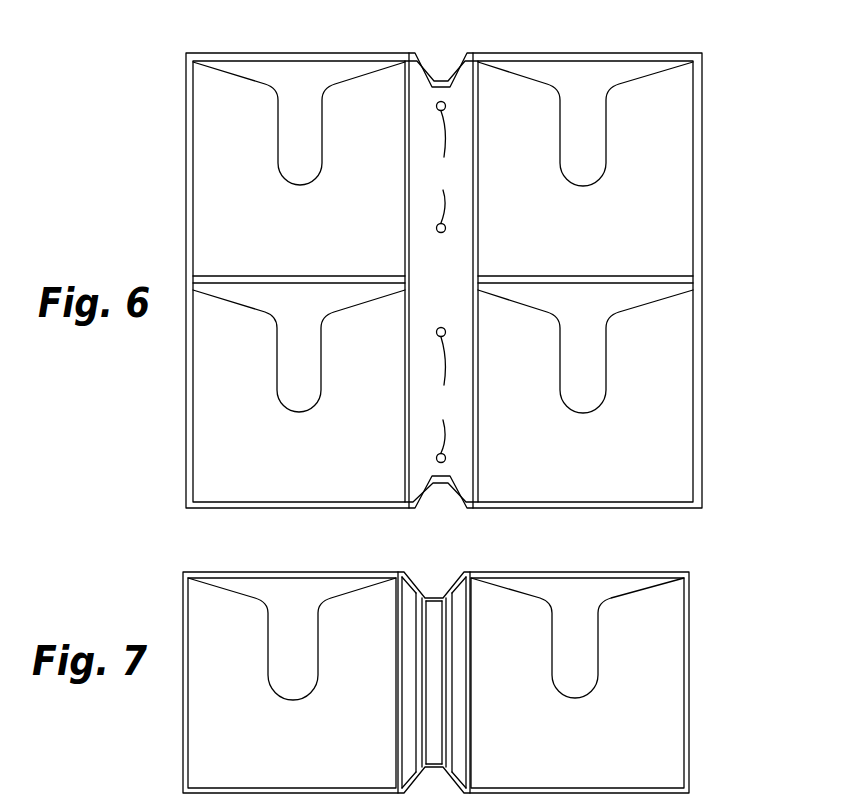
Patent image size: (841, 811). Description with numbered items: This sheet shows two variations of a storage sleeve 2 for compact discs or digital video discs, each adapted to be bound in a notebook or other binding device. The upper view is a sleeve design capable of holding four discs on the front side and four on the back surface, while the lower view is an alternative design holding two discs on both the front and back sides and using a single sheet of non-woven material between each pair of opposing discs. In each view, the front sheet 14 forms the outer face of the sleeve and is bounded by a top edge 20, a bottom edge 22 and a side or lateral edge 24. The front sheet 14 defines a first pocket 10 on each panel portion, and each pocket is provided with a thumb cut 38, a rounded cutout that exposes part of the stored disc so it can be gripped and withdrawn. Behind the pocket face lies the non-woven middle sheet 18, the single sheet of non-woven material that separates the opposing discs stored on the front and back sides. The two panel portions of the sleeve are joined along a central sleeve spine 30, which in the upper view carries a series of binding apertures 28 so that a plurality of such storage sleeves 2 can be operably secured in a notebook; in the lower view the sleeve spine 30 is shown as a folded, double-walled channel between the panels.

In FIG. 6, the storage sleeve 2 is at (148, 150).
In FIG. 7, the storage sleeve 2 is at (147, 591).
In FIG. 6, the first pocket 10 is at (272, 72).
In FIG. 7, the first pocket 10 is at (290, 582).
In FIG. 6, the front sheet 14 is at (218, 397).
In FIG. 7, the front sheet 14 is at (436, 683).
In FIG. 6, the non-woven middle sheet 18 is at (313, 77).
In FIG. 7, the non-woven middle sheet 18 is at (258, 578).
In FIG. 6, the top edge 20 is at (617, 52).
In FIG. 6, the bottom edge 22 is at (675, 510).
In FIG. 7, the bottom edge 22 is at (660, 793).
In FIG. 6, the side or lateral edge 24 is at (703, 242).
In FIG. 7, the side or lateral edge 24 is at (690, 690).
In FIG. 6, the binding aperture 28 is at (442, 282).
In FIG. 6, the sleeve spine 30 is at (452, 63).
In FIG. 7, the sleeve spine 30 is at (425, 582).
In FIG. 6, the thumb cut 38 is at (280, 178).
In FIG. 7, the thumb cut 38 is at (292, 703).